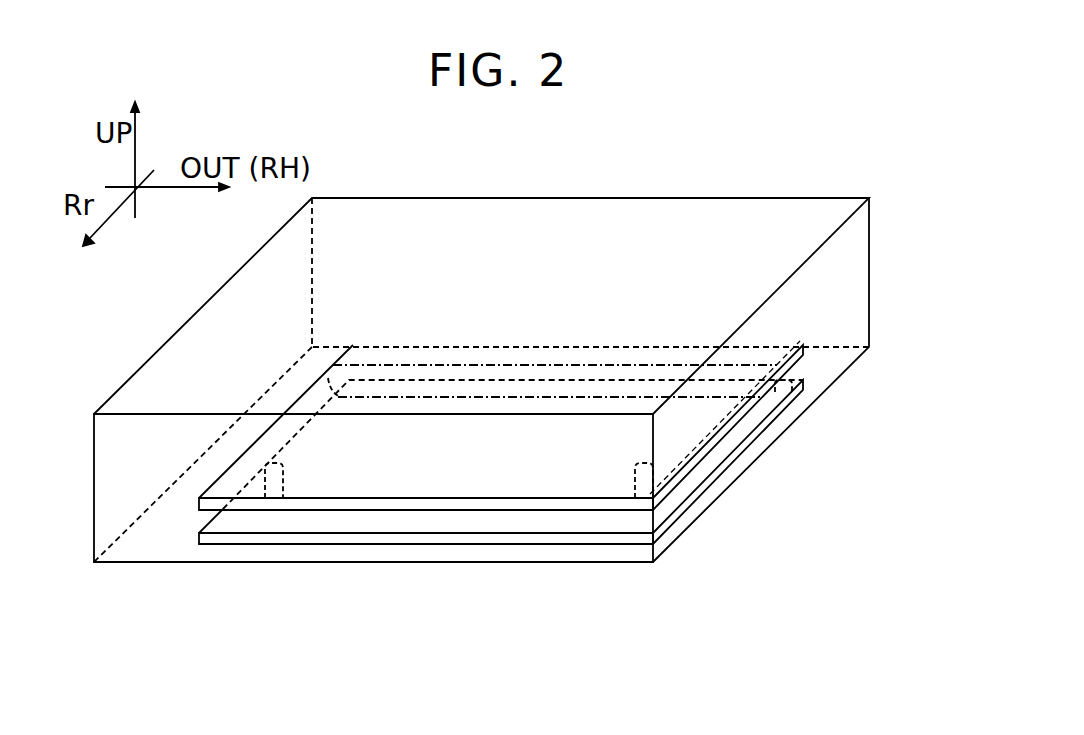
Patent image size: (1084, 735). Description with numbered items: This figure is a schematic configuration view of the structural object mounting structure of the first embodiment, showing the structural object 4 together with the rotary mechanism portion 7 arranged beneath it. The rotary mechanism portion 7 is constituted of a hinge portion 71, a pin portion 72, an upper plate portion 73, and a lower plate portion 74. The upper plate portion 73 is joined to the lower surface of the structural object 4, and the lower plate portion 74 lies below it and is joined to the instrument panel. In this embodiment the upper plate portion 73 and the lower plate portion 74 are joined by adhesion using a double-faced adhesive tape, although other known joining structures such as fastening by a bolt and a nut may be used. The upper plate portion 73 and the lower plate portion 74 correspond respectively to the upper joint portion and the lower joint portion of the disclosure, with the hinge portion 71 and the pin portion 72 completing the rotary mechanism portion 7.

The structural object 4 is at (604, 179).
The rotary mechanism portion 7 is at (735, 430).
The hinge portion 71 is at (803, 372).
The pin portion 72 is at (663, 473).
The upper plate portion 73 is at (420, 483).
The lower plate portion 74 is at (562, 542).